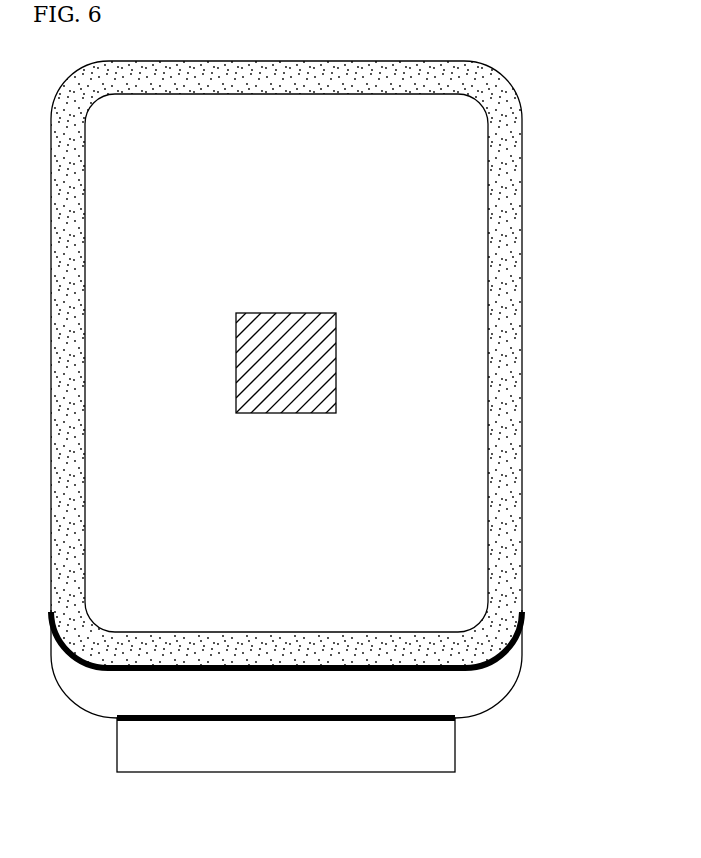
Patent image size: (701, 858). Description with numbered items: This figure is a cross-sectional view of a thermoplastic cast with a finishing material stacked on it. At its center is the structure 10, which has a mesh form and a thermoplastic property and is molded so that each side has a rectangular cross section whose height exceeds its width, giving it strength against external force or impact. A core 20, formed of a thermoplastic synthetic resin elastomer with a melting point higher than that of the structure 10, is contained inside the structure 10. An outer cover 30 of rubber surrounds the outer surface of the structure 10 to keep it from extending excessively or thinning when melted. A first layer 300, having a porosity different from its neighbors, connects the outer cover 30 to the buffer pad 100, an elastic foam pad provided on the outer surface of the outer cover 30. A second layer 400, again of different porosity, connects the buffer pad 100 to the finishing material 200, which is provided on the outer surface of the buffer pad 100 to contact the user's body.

The structure 10 is at (456, 197).
The core 20 is at (318, 339).
The outer cover 30 is at (502, 462).
The first layer 300 is at (518, 652).
The buffer pad 100 is at (487, 675).
The second layer 400 is at (453, 718).
The finishing material 200 is at (432, 757).